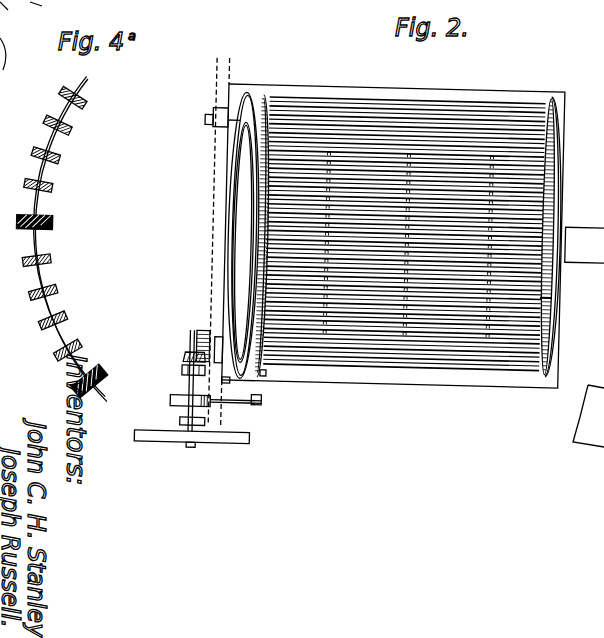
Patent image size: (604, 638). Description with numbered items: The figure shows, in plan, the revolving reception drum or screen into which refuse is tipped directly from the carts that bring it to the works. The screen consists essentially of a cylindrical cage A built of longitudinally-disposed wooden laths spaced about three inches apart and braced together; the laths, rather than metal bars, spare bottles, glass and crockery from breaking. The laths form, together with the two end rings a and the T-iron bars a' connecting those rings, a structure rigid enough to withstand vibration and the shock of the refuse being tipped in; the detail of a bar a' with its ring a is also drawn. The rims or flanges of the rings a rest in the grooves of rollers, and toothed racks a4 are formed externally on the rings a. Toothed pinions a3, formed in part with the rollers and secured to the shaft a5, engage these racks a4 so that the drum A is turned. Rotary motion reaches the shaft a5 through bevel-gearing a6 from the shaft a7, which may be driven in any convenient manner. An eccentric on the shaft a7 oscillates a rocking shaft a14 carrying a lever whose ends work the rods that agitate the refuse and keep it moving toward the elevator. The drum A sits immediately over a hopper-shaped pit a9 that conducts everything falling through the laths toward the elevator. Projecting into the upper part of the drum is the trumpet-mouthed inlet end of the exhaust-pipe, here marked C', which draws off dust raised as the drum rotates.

In FIG. 4A, the cylindrical cage A is at (64, 238).
In FIG. 2, the cylindrical cage A is at (404, 238).
In FIG. 2, the end rings a is at (404, 237).
In FIG. 4A, the T-iron bars a' is at (56, 303).
In FIG. 2, the T-iron bars a' is at (424, 238).
In FIG. 2, the pit a9 is at (393, 236).
In FIG. 2, the toothed racks a4 is at (570, 298).
In FIG. 2, the brush holder block C' is at (584, 245).
In FIG. 2, the toothed pinions a3 is at (201, 395).
In FIG. 2, the shaft a5 is at (207, 334).
In FIG. 2, the bevel-gearing a6 is at (191, 344).
In FIG. 2, the shaft a7 is at (182, 370).
In FIG. 2, the rocking shaft a14 is at (278, 389).